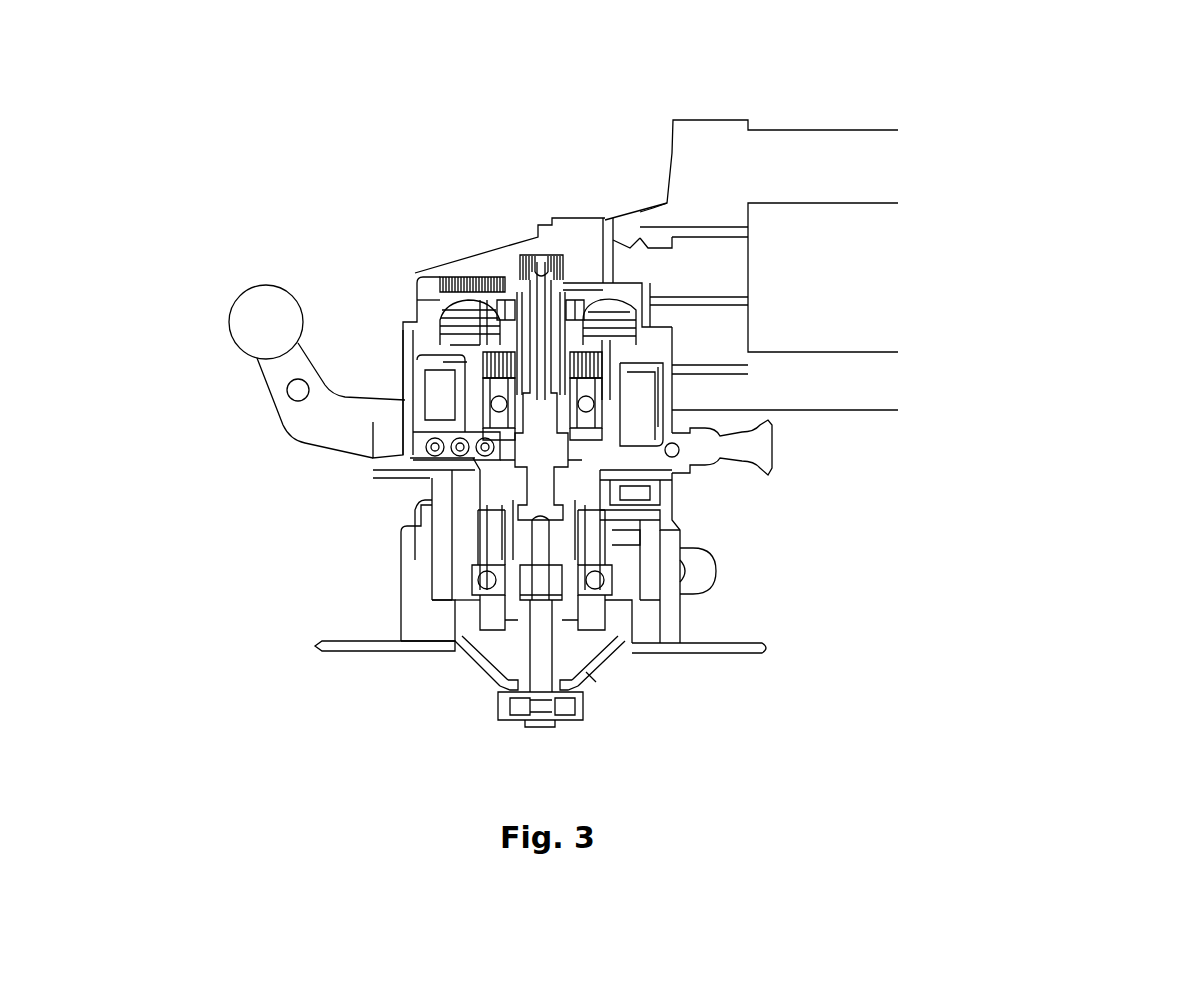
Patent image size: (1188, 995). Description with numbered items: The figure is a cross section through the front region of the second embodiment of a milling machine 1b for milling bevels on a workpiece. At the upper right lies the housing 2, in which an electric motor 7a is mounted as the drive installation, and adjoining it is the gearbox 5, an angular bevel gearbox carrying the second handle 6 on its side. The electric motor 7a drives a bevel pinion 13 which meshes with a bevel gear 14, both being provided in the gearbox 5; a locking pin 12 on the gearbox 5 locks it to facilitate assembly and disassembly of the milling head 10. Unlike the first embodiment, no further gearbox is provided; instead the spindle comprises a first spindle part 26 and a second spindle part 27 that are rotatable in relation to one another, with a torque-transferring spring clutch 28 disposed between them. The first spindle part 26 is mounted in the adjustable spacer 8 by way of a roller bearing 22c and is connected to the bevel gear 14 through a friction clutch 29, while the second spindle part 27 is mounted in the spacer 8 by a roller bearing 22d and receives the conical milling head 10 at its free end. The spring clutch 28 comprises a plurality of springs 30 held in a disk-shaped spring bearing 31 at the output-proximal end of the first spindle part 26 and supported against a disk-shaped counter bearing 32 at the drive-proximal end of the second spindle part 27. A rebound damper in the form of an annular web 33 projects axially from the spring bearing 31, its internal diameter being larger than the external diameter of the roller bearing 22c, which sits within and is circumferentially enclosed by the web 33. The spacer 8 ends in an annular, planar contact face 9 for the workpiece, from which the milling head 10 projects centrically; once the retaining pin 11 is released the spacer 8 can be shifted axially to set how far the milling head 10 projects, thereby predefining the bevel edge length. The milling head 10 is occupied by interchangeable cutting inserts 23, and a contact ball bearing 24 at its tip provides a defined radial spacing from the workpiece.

The milling machine 1b is at (1097, 105).
The housing 2 is at (872, 128).
The gearbox 5 is at (523, 219).
The second handle 6 is at (230, 302).
The electric motor 7a is at (880, 273).
The adjustable spacer 8 is at (680, 615).
The contact face 9 is at (318, 648).
The milling head 10 is at (473, 742).
The retaining pin 11 is at (717, 568).
The locking pin 12 is at (772, 447).
The bevel pinion 13 is at (632, 262).
The bevel gear 14 is at (440, 283).
The roller bearing 22c is at (396, 446).
The roller bearing 22d is at (480, 585).
The cutting inserts 23 is at (605, 672).
The contact ball bearing 24 is at (590, 712).
The first spindle part 26 is at (520, 288).
The second spindle part 27 is at (520, 546).
The spring clutch 28 is at (400, 422).
The friction clutch 29 is at (420, 328).
The springs 30 is at (405, 455).
The spring bearing 31 is at (650, 452).
The counter bearing 32 is at (660, 508).
The annular web 33 is at (395, 370).